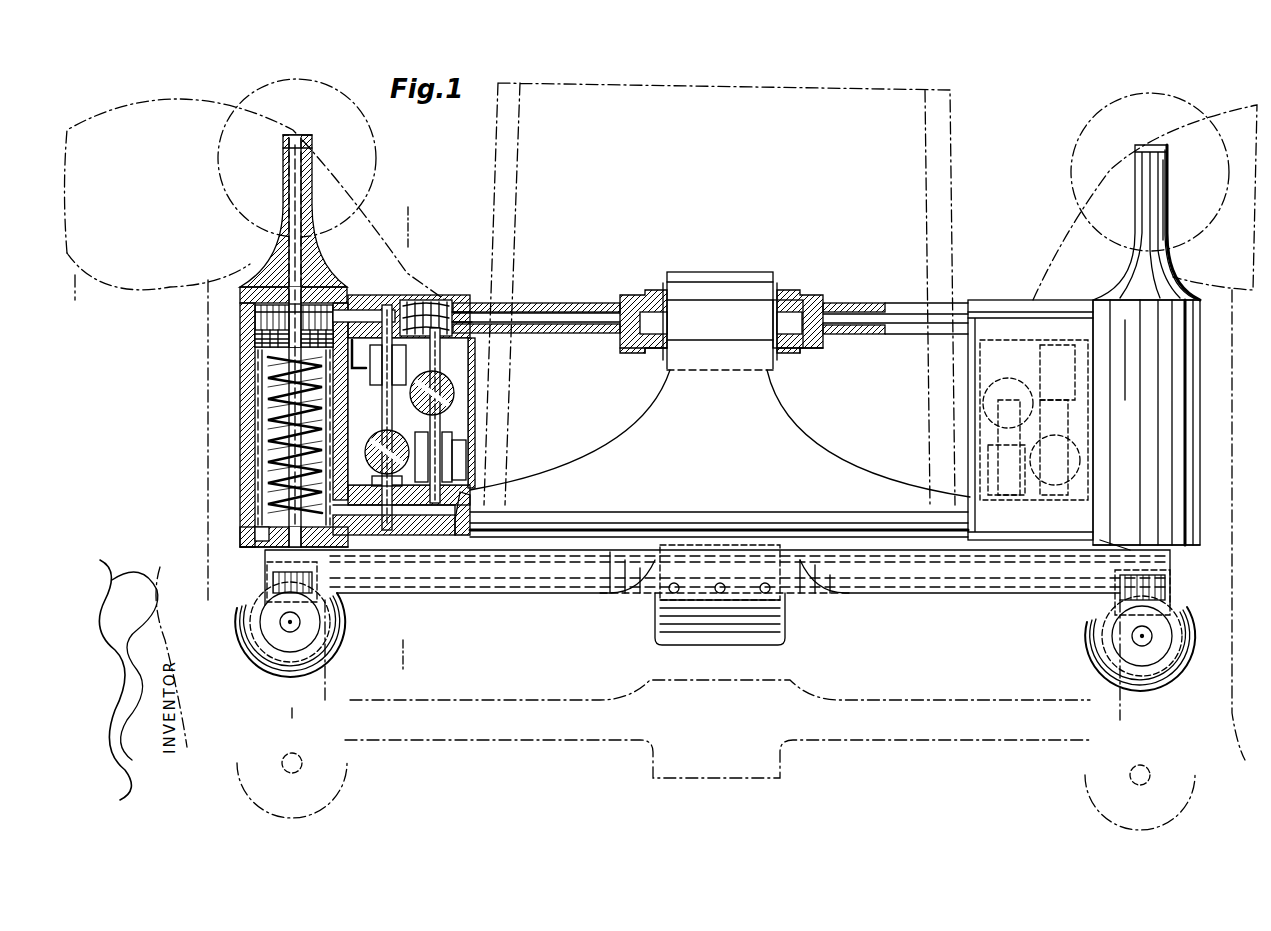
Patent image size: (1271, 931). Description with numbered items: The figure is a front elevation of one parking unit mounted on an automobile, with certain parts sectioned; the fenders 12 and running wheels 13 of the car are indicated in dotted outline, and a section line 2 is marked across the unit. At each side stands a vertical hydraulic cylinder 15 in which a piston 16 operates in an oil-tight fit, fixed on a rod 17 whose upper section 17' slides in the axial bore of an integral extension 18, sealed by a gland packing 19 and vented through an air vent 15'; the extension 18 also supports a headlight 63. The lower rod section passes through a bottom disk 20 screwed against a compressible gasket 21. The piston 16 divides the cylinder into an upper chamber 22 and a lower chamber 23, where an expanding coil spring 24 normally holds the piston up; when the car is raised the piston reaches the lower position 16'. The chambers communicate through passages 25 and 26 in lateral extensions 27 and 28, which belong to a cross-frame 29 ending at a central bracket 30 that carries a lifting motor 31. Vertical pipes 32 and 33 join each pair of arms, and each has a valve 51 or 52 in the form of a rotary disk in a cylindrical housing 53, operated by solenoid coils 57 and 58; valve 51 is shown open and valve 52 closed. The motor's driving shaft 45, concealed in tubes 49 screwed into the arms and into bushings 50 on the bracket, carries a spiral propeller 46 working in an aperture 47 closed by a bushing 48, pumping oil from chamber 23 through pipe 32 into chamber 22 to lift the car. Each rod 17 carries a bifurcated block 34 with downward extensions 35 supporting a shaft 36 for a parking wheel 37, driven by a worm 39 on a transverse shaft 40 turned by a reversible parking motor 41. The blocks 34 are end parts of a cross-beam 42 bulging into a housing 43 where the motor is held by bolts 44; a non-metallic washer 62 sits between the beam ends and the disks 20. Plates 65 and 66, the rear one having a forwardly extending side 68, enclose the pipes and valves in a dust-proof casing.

The section line 2- 2 is at (414, 228).
The fenders 12 is at (183, 97).
The running wheels 13 is at (188, 740).
The hydraulic cylinder 15 is at (693, 442).
The air vent 15' is at (301, 118).
The piston 16 is at (252, 326).
The lowered piston position 16' is at (254, 437).
The piston rod 17 is at (236, 418).
The upper section of piston rod 17' is at (268, 214).
The cylinder extension 18 is at (282, 189).
The gland packing 19 is at (262, 280).
The bottom disk 20 is at (243, 537).
The compressible gasket 21 is at (255, 519).
The upper chamber 22 is at (255, 312).
The lower chamber 23 is at (268, 424).
The expanding coil spring 24 is at (262, 400).
The passage 25 is at (392, 286).
The passage 26 is at (362, 535).
The lateral extension 27 is at (380, 296).
The lateral extension 28 is at (410, 535).
The cross-frame 29 is at (720, 433).
The bracket 30 is at (712, 290).
The lifting motor 31 is at (790, 310).
The vertical pipe 32 is at (442, 438).
The vertical pipe 33 is at (382, 399).
The bifurcated block 34 is at (273, 576).
The downward extensions 35 is at (272, 630).
The shaft 36 is at (290, 632).
The parking wheel 37 is at (297, 668).
The worm 39 is at (267, 596).
The transverse shaft 40 is at (575, 593).
The parking motor 41 is at (768, 638).
The cross-beam 42 is at (505, 593).
The housing 43 is at (700, 572).
The bolts 44 is at (765, 593).
The driving shaft 45 is at (572, 310).
The spiral propeller 46 is at (440, 300).
The aperture 47 is at (415, 300).
The bushing 48 is at (464, 302).
The tube 49 is at (595, 330).
The bushing 50 is at (630, 293).
The valve 51 is at (452, 395).
The valve 52 is at (372, 468).
The cylindrical housing 53 is at (377, 437).
The solenoid coil 57 is at (466, 458).
The solenoid coil 58 is at (352, 340).
The washer 62 is at (265, 557).
The headlight 63 is at (330, 88).
The front plate 65 is at (465, 512).
The rear plate 66 is at (455, 412).
The forwardly extending side 68 is at (440, 365).